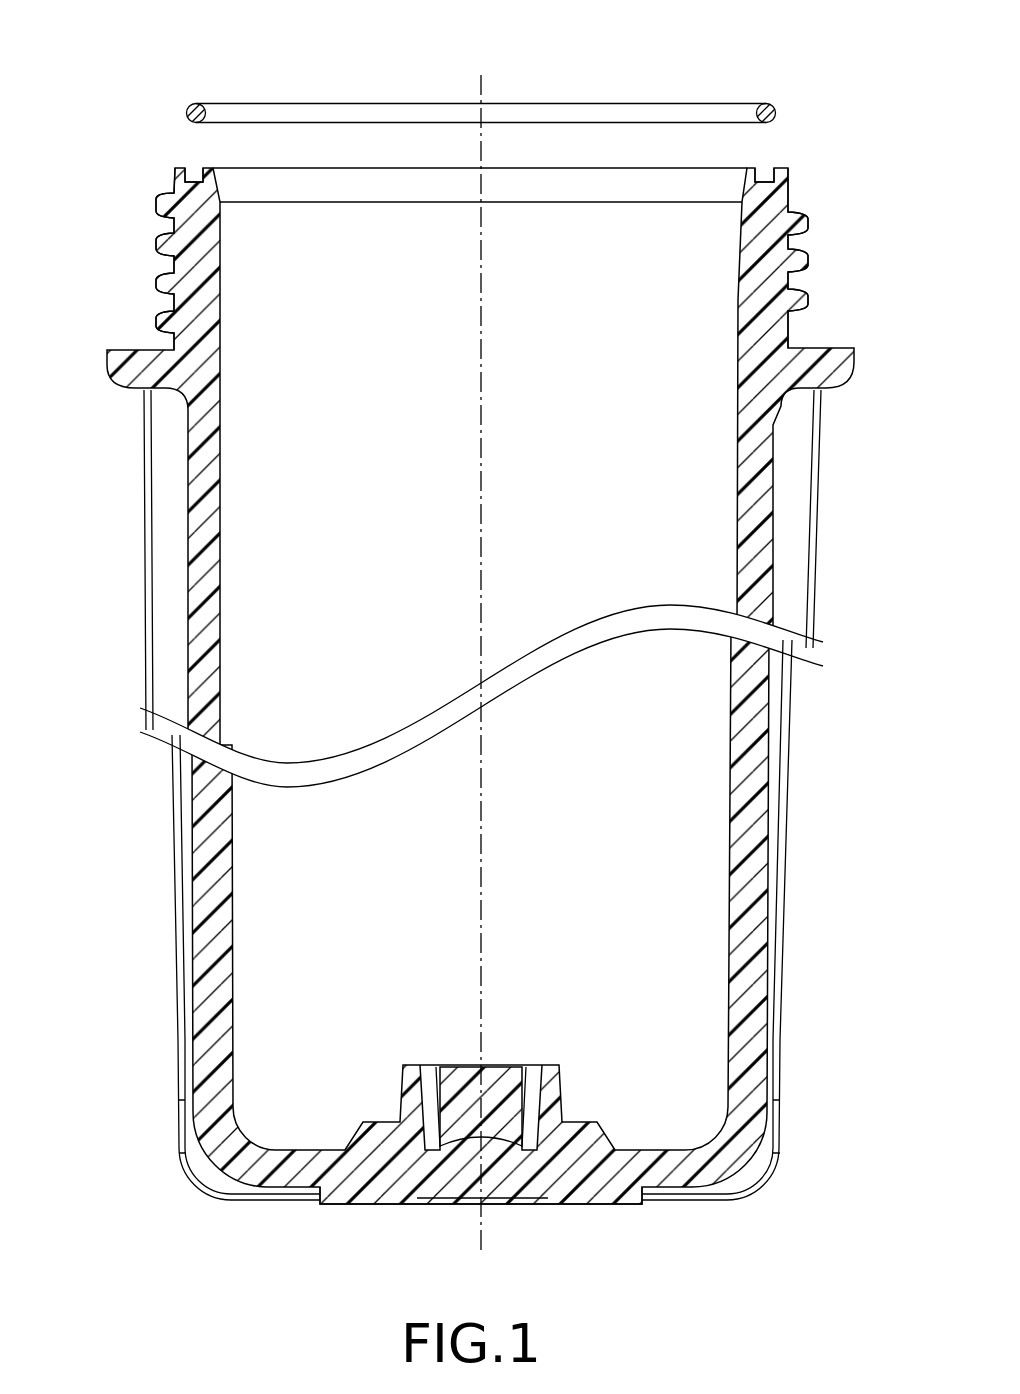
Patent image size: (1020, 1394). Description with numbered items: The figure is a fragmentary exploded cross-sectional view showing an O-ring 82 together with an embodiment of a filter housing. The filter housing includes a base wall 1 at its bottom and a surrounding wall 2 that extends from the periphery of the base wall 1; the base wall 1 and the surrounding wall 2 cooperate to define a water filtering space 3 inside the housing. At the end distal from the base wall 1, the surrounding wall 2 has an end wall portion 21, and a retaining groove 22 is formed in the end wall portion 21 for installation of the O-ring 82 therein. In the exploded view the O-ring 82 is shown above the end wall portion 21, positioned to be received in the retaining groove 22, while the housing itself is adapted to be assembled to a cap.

The base wall 1 is at (353, 1205).
The surrounding wall 2 is at (192, 895).
The water filtering space 3 is at (273, 996).
The end wall portion 21 is at (175, 175).
The retaining groove 22 is at (196, 178).
The O-ring 82 is at (197, 103).